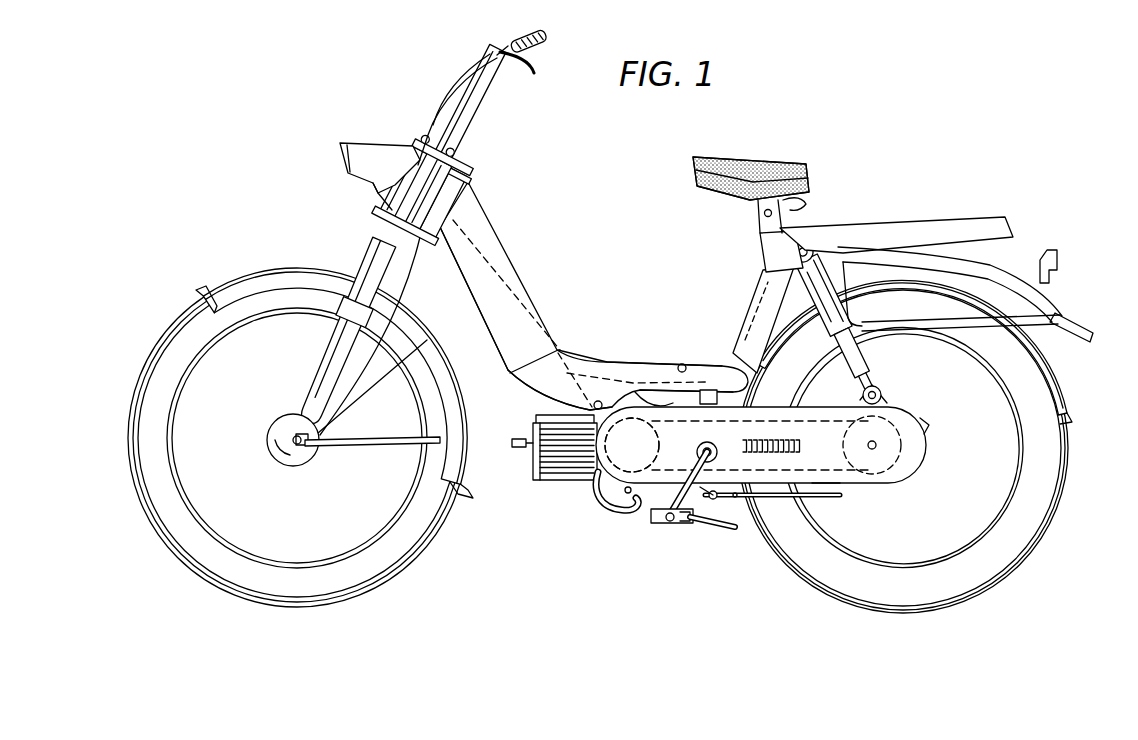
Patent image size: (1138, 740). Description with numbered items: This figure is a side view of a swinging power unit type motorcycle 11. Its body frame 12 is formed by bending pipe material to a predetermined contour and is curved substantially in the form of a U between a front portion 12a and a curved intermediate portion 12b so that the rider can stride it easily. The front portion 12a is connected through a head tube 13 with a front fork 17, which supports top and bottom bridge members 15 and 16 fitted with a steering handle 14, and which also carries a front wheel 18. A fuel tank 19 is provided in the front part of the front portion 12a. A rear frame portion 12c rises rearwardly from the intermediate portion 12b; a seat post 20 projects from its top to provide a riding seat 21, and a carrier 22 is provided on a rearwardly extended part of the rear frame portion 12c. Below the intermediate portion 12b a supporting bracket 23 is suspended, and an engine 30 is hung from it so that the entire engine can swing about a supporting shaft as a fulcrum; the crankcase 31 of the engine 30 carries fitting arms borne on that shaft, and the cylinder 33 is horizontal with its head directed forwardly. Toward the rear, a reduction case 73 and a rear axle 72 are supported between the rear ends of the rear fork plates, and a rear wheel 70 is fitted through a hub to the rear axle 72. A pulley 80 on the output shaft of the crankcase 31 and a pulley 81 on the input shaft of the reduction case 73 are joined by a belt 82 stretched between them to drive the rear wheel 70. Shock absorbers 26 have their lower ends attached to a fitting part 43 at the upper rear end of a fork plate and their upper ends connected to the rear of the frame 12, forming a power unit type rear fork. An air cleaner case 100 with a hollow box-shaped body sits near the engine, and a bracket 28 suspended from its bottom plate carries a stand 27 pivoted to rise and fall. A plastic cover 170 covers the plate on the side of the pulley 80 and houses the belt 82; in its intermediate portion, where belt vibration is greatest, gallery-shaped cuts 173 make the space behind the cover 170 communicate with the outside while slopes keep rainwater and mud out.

The motorcycle 11 is at (400, 233).
The body frame 12 is at (617, 309).
The front portion 12a is at (497, 238).
The curved intermediate portion 12b is at (640, 356).
The rear frame portion 12c is at (760, 285).
The head tube 13 is at (468, 180).
The steering handle 14 is at (480, 98).
The top bridge member 15 is at (446, 148).
The bottom bridge member 16 is at (380, 225).
The front fork 17 is at (322, 385).
The front wheel 18 is at (205, 328).
The fuel tank 19 is at (484, 322).
The seat post 20 is at (758, 222).
The riding seat 21 is at (797, 162).
The carrier 22 is at (933, 228).
The supporting bracket 23 is at (528, 378).
The shock absorbers 26 is at (858, 357).
The stand 27 is at (748, 500).
The bracket 28 is at (720, 498).
The engine 30 is at (573, 444).
The crankcase 31 is at (612, 478).
The cylinder 33 is at (537, 476).
The fitting part 43 is at (882, 398).
The rear wheel 70 is at (1012, 548).
The rear axle 72 is at (698, 526).
The reduction case 73 is at (702, 462).
The pulley 80 is at (779, 502).
The pulley 81 is at (900, 445).
The belt 82 is at (660, 474).
The air cleaner case 100 is at (706, 392).
The cover 170 is at (826, 462).
The cuts 173 is at (803, 476).